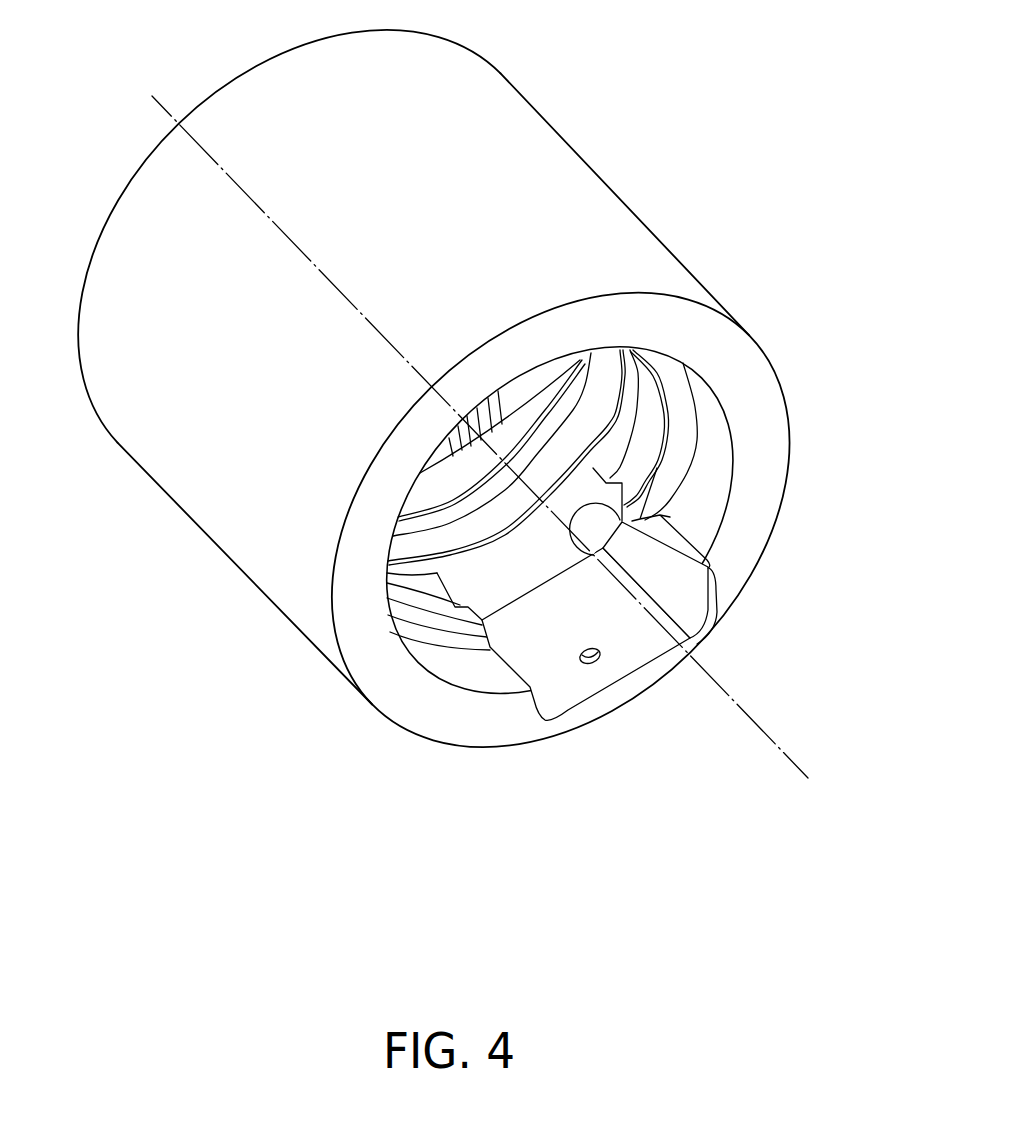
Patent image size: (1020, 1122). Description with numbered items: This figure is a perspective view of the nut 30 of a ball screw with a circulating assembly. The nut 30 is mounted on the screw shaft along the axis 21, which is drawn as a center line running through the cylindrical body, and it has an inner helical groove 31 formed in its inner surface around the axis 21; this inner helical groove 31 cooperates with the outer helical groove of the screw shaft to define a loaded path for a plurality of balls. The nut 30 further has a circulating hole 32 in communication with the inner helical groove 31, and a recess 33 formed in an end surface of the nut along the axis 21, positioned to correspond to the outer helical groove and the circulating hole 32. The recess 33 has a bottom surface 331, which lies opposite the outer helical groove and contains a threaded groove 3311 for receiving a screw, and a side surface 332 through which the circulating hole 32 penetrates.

The nut 30 is at (630, 163).
The inner helical groove 31 is at (427, 590).
The circulating hole 32 is at (597, 527).
The recess 33 is at (613, 662).
The bottom surface 331 is at (656, 626).
The threaded groove 3311 is at (598, 658).
The side surface 332 is at (547, 553).
The axis 21 is at (753, 718).